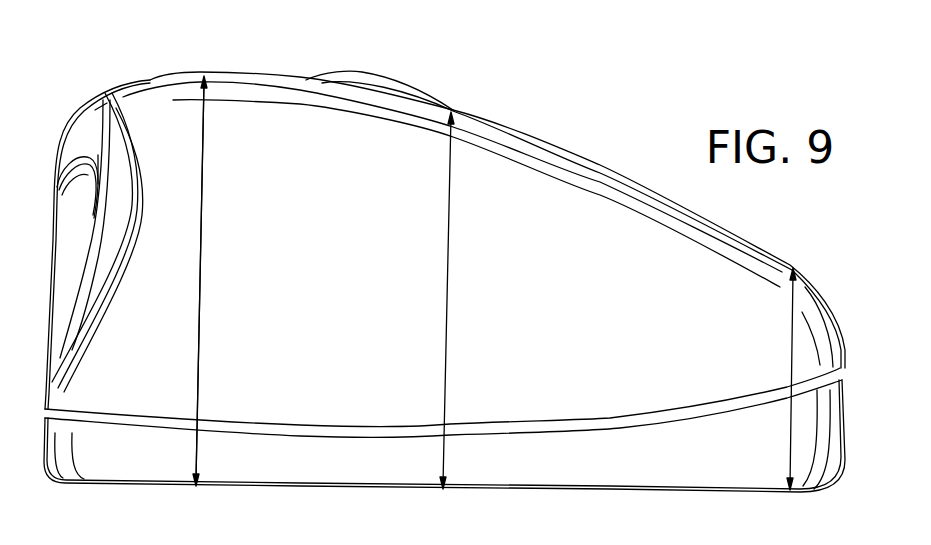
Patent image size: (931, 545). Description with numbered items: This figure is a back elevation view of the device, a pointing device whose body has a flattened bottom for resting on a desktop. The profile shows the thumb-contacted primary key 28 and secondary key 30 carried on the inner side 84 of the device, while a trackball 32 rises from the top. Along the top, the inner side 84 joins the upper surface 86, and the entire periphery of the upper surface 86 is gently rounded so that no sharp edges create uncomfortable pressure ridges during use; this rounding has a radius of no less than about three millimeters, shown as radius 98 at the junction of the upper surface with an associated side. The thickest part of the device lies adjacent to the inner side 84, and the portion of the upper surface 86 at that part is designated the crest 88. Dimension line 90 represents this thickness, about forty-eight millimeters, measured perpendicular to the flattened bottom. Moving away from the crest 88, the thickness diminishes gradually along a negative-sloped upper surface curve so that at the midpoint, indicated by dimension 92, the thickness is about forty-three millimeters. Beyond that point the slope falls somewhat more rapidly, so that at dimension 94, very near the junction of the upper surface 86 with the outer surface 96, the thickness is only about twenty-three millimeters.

The primary key 28 is at (79, 225).
The secondary key 30 is at (92, 125).
The trackball 32 is at (388, 75).
The inner side 84 is at (53, 218).
The upper surface 86 is at (543, 196).
The crest 88 is at (205, 73).
The dimension line 90 is at (200, 279).
The dimension 92 is at (447, 320).
The dimension 94 is at (792, 342).
The outer surface 96 is at (847, 433).
The radius 98 is at (838, 320).